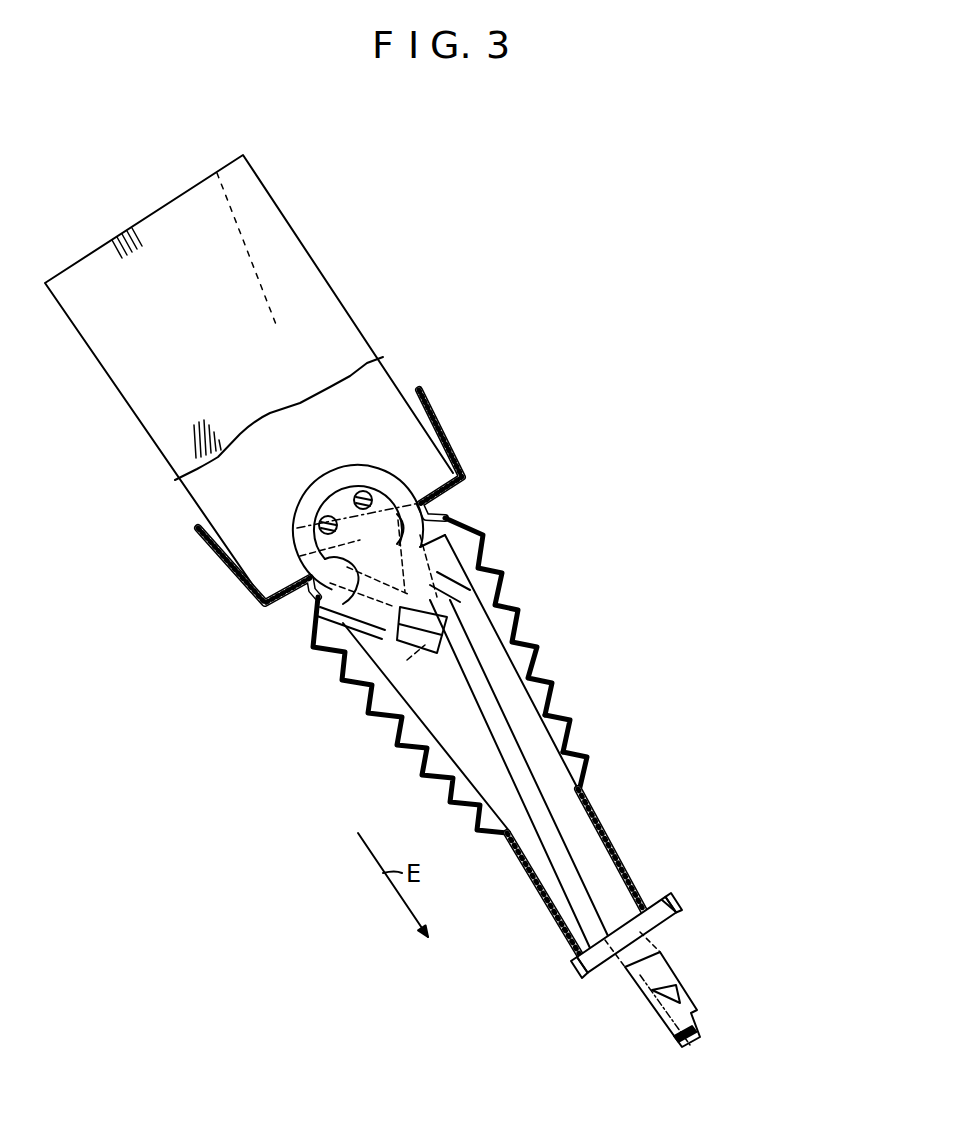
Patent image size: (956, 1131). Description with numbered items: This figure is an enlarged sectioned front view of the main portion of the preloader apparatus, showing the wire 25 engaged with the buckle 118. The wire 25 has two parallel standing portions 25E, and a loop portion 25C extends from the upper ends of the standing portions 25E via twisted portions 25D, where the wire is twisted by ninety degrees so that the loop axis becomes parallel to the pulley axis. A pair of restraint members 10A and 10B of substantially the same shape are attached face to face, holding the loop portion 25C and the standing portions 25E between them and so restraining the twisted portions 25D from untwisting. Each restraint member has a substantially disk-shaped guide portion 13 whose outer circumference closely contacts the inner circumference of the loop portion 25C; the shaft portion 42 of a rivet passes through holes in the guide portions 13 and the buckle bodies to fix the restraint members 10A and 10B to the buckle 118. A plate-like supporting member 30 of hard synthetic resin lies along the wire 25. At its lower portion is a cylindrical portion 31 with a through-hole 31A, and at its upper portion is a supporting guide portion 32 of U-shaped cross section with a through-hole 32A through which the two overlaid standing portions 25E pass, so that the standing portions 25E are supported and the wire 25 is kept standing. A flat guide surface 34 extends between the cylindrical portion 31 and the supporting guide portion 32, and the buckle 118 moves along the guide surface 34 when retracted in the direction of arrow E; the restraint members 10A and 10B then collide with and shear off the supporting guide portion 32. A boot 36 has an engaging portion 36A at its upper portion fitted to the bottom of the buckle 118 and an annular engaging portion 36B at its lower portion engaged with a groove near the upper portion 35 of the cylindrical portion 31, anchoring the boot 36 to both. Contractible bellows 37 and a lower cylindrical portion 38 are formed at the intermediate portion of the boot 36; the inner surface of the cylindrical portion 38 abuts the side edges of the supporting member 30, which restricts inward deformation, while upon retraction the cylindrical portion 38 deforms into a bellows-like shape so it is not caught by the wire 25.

The buckle 118 is at (313, 308).
The engaging portion 36A is at (433, 407).
The guide portion 13 is at (343, 507).
The shaft portion 42 is at (366, 488).
The restraint member 10B is at (450, 530).
The loop portion 25C is at (330, 618).
The restraint member 10A is at (343, 618).
The twisted portion 25D is at (387, 622).
The through-hole 32A is at (407, 670).
The supporting guide portion 32 is at (463, 625).
The bellows 37 is at (543, 682).
The guide surface 34 is at (527, 740).
The supporting member 30 is at (576, 763).
The standing portion 25E is at (558, 837).
The cylindrical portion 38 is at (620, 848).
The upper portion 35 is at (650, 898).
The engaging portion 36B is at (673, 911).
The cylindrical portion 31 is at (660, 962).
The through-hole 31A is at (640, 973).
The wire 25 is at (673, 1047).
The boot 36 is at (517, 863).